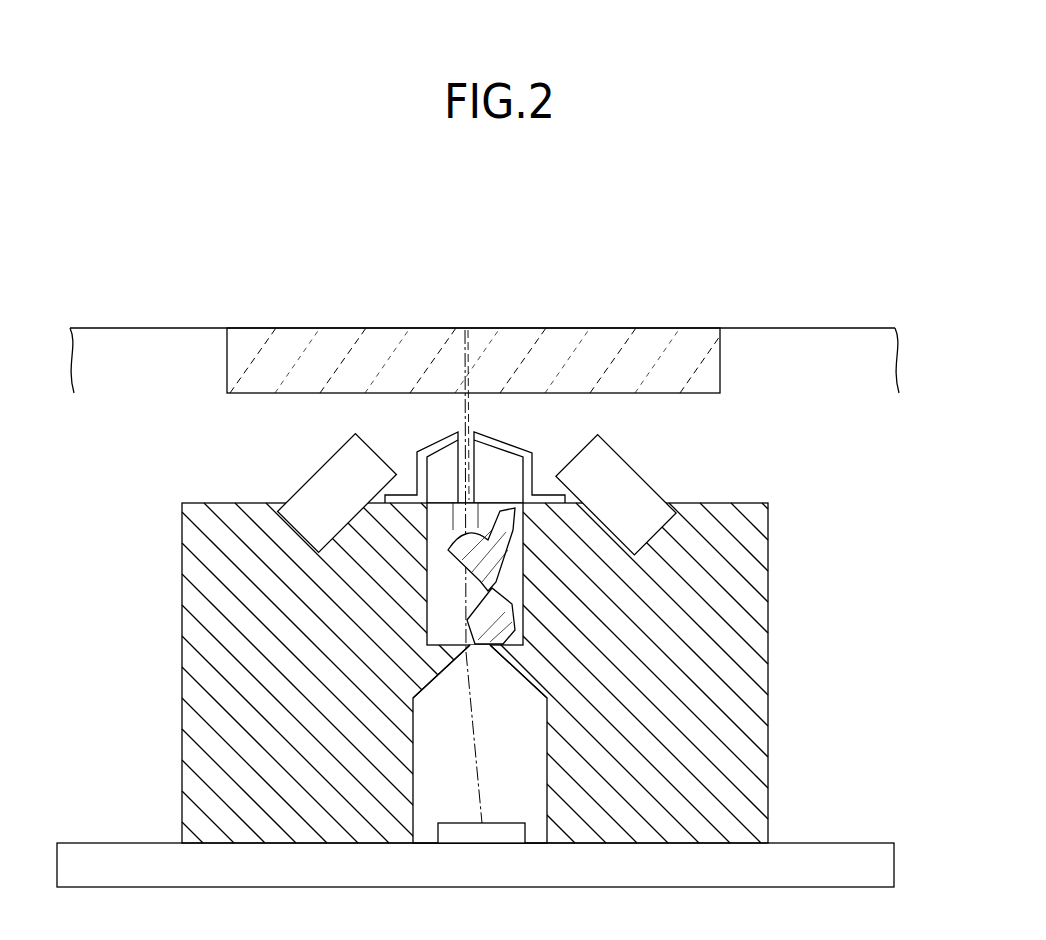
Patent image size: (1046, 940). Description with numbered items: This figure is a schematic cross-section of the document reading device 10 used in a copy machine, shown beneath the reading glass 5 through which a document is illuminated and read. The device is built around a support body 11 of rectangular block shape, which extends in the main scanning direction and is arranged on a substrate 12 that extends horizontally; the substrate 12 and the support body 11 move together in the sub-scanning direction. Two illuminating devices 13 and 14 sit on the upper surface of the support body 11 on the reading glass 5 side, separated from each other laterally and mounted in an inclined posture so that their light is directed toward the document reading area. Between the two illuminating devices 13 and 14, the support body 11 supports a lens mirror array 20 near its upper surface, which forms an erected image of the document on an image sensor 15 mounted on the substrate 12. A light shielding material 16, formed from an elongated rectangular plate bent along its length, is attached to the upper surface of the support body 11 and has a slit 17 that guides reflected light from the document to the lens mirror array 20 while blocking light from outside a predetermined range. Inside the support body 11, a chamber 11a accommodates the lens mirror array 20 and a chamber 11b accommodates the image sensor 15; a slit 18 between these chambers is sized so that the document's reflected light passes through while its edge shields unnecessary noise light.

The reading glass 5 is at (280, 328).
The document reading device 10 is at (501, 602).
The support body 11 is at (760, 730).
The chamber 11a is at (510, 572).
The chamber 11b is at (433, 785).
The substrate 12 is at (857, 857).
The illuminating device 13 is at (312, 473).
The illuminating device 14 is at (643, 473).
The image sensor 15 is at (487, 838).
The light shielding material 16 is at (437, 438).
The slit 17 is at (474, 500).
The slit 18 is at (418, 684).
The lens mirror array 20 is at (470, 600).